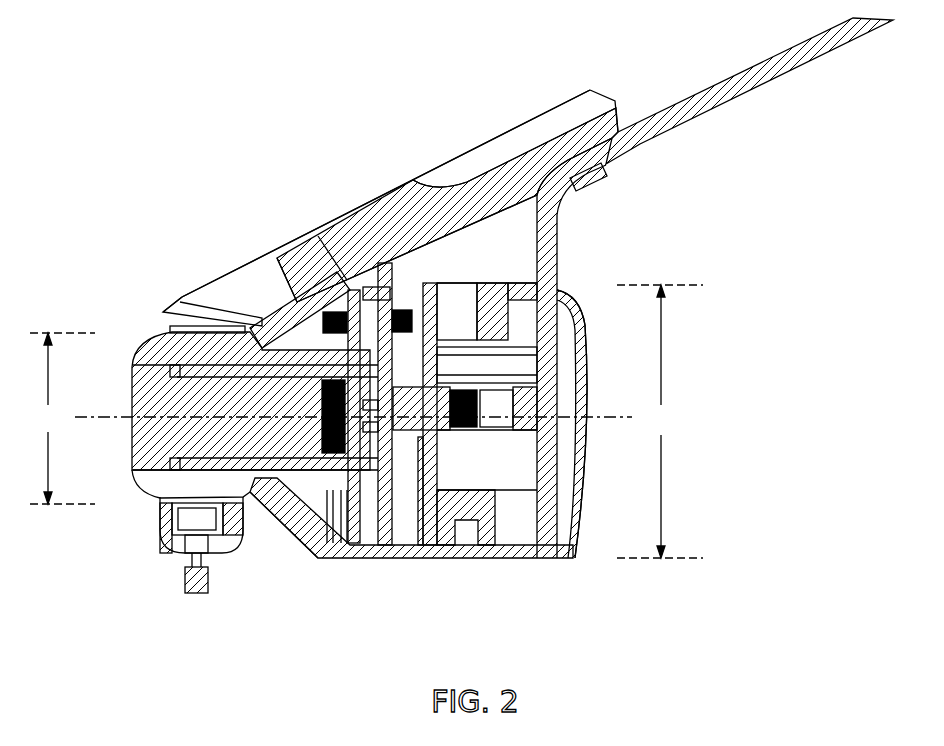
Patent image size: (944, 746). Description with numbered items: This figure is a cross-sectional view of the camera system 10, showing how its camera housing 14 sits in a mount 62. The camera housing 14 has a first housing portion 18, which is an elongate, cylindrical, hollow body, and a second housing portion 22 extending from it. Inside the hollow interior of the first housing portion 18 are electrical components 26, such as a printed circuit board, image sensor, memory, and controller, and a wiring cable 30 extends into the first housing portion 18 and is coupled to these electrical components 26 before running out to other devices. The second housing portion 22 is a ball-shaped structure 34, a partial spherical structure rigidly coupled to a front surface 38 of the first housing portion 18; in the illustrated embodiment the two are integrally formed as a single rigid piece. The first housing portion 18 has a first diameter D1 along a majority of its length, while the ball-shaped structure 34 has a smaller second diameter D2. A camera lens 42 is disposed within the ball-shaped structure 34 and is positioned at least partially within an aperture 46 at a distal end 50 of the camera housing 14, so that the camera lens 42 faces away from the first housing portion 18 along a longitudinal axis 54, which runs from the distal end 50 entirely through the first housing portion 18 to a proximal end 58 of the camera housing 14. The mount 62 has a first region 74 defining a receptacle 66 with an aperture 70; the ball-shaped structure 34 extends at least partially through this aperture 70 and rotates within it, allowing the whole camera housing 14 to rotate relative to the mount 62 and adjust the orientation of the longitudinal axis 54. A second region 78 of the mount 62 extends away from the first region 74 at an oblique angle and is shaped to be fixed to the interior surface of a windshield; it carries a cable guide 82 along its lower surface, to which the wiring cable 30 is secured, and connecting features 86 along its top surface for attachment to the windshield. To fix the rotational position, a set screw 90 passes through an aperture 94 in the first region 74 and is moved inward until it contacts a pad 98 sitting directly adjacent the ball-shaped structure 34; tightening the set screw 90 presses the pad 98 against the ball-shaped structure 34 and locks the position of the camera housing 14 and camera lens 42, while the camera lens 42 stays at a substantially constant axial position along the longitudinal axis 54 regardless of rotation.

The camera system 10 is at (246, 98).
The camera housing 14 is at (560, 568).
The first housing portion 18 is at (489, 575).
The second housing portion 22 is at (255, 500).
The electrical components 26 is at (398, 560).
The wiring cable 30 is at (556, 236).
The ball-shaped structure 34 is at (180, 540).
The front surface 38 is at (278, 312).
The camera lens 42 is at (142, 392).
The aperture 46 is at (136, 366).
The distal end 50 is at (180, 488).
The longitudinal axis 54 is at (622, 405).
The proximal end 58 is at (584, 313).
The mount 62 is at (405, 177).
The receptacle 66 is at (166, 314).
The aperture 70 is at (192, 326).
The first region 74 is at (176, 512).
The second region 78 is at (492, 140).
The cable guide 82 is at (604, 170).
The connecting features 86 is at (614, 97).
The set screw 90 is at (199, 594).
The aperture 94 is at (209, 580).
The pad 98 is at (203, 520).
The first diameter D1 is at (660, 421).
The second diameter D2 is at (62, 418).